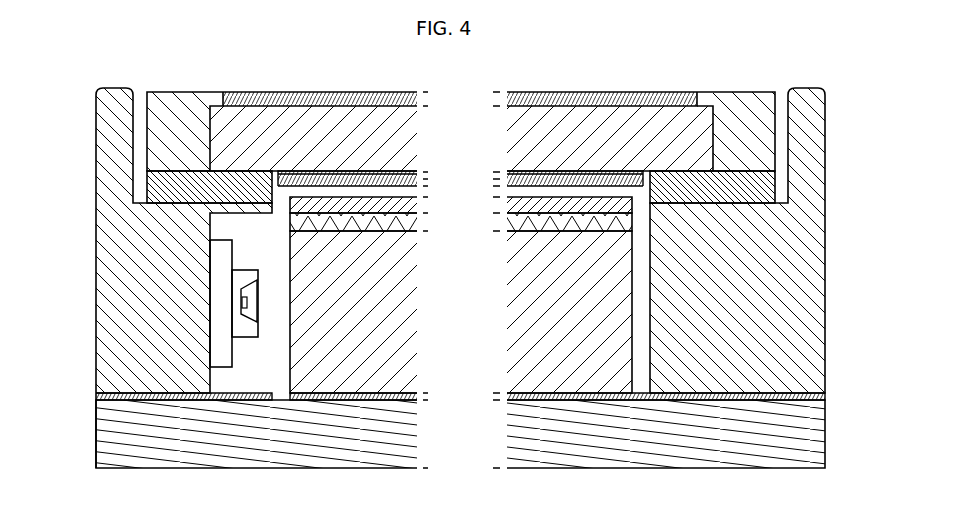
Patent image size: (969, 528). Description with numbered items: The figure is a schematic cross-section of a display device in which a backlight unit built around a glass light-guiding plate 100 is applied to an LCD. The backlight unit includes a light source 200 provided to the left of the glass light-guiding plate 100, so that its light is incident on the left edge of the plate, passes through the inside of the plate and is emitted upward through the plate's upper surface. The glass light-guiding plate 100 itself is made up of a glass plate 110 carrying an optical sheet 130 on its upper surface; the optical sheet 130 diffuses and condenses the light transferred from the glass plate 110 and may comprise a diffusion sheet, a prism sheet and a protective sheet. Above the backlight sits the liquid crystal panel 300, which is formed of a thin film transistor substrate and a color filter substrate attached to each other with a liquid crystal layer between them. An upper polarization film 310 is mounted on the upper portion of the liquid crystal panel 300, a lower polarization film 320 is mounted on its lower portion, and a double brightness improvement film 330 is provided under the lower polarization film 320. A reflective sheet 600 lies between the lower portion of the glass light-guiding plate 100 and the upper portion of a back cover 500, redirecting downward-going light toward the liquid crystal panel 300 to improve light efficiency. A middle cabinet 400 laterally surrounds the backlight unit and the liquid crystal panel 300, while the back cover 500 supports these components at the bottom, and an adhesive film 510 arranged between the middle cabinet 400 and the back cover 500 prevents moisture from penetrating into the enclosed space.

The glass light-guiding plate 100 is at (434, 347).
The glass plate 110 is at (312, 373).
The optical sheet 130 is at (523, 217).
The light source 200 is at (243, 375).
The liquid crystal panel 300 is at (513, 141).
The upper polarization film 310 is at (507, 97).
The lower polarization film 320 is at (507, 178).
The double brightness improvement film 330 is at (506, 195).
The middle cabinet 400 is at (96, 259).
The back cover 500 is at (810, 462).
The adhesive film 510 is at (826, 397).
The reflective sheet 600 is at (363, 399).